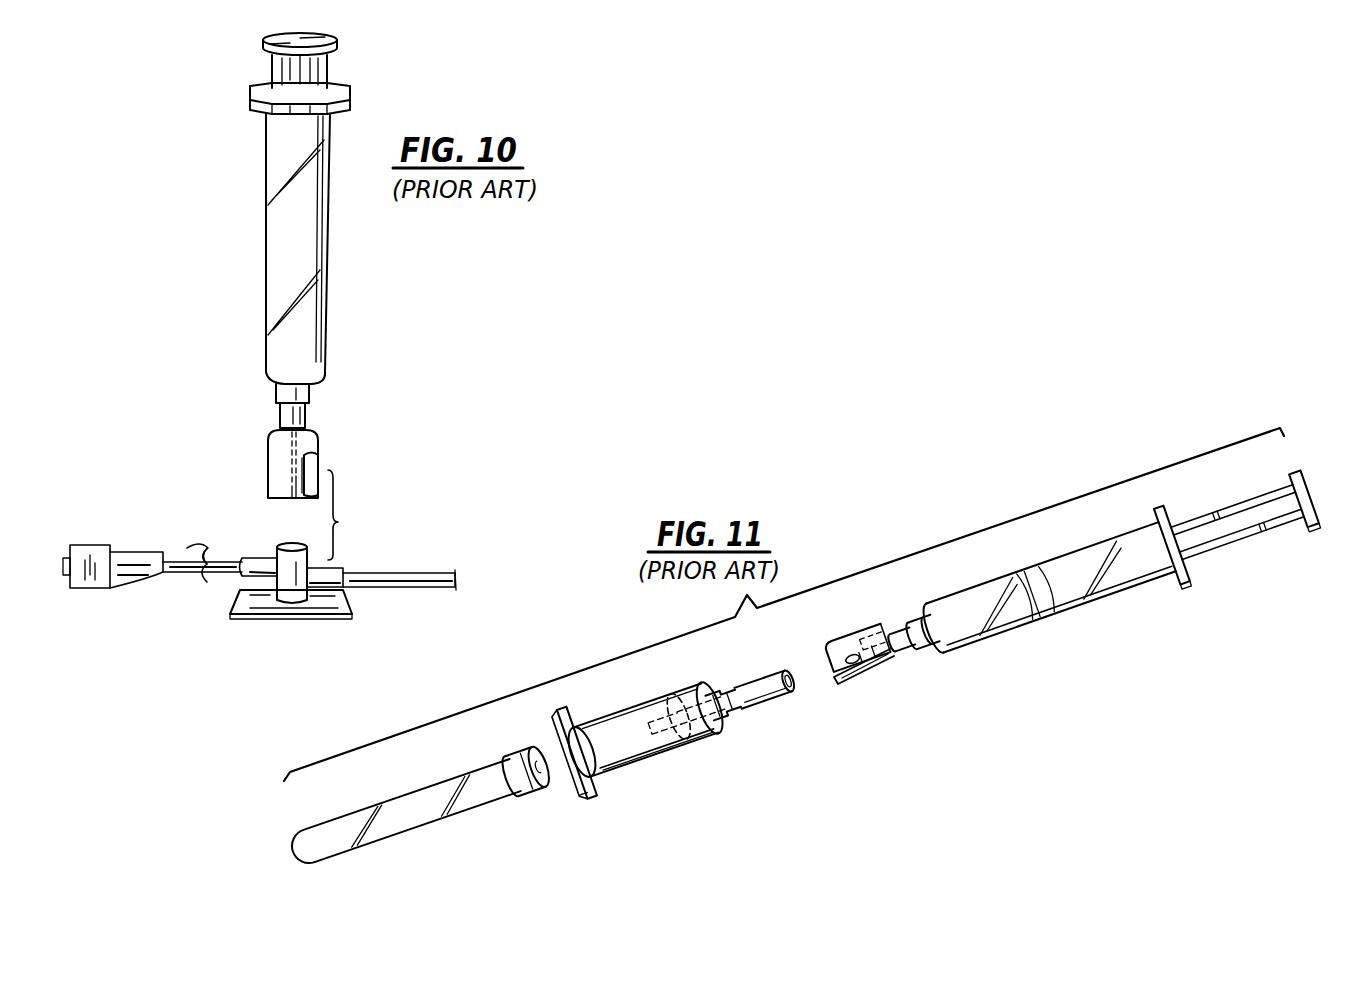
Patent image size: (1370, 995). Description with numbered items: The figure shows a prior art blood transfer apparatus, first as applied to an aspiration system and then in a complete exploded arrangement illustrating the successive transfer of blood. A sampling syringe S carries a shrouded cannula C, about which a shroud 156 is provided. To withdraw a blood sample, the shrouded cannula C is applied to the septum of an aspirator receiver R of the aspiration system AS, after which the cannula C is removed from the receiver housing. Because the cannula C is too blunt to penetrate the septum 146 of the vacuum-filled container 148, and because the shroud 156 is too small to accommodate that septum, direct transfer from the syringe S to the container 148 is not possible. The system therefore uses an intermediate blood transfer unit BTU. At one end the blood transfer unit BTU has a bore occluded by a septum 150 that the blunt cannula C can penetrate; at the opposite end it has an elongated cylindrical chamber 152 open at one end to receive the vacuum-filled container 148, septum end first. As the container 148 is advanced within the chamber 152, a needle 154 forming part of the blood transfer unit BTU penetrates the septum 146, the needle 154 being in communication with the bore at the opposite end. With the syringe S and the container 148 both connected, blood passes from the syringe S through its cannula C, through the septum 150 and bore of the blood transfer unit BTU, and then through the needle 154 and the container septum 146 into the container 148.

In FIG. 10, the sampling syringe S is at (266, 246).
In FIG. 11, the sampling syringe S is at (1057, 606).
In FIG. 10, the shrouded cannula C is at (283, 446).
In FIG. 11, the shrouded cannula C is at (885, 660).
In FIG. 10, the shroud 156 is at (268, 483).
In FIG. 11, the shroud 156 is at (859, 680).
In FIG. 10, the aspirator receiver R is at (282, 556).
In FIG. 10, the aspiration system AS is at (418, 575).
In FIG. 11, the septum 146 is at (548, 782).
In FIG. 11, the vacuum-filled container 148 is at (384, 843).
In FIG. 11, the septum 150 is at (793, 688).
In FIG. 11, the elongated cylindrical chamber 152 is at (615, 717).
In FIG. 11, the needle 154 is at (687, 742).
In FIG. 11, the blood transfer unit BTU is at (638, 762).